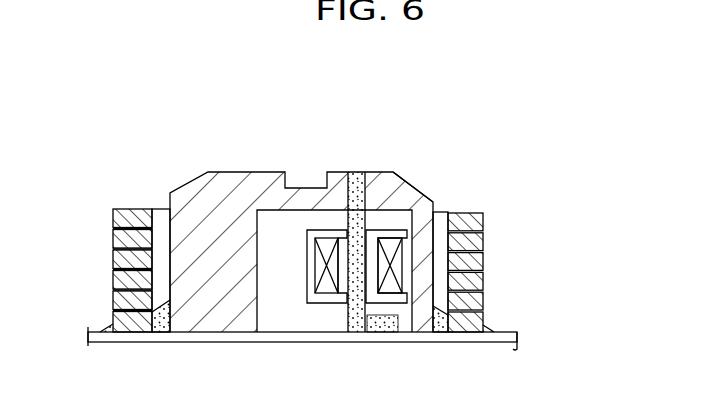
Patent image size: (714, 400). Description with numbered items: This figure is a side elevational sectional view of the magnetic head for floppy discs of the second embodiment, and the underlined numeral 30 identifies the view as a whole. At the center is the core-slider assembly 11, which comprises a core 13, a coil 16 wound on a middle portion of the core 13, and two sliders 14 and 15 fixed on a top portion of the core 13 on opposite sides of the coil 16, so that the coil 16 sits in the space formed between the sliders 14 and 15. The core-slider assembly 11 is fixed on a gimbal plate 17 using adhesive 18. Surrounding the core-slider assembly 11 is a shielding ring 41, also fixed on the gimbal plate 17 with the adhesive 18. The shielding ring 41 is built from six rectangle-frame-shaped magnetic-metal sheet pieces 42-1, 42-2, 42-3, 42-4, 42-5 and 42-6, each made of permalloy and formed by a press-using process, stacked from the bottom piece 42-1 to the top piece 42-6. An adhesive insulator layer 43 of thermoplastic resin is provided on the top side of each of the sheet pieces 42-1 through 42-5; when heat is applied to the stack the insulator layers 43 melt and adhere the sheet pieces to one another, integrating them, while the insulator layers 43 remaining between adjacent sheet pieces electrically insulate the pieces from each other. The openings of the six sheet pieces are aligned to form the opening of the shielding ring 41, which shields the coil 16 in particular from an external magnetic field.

The core-slider assembly 11 is at (317, 222).
The core 13 is at (357, 180).
The slider 14 is at (224, 180).
The slider 15 is at (412, 181).
The coil 16 is at (314, 268).
The gimbal plate 17 is at (308, 343).
The adhesive 18 is at (162, 331).
The laminated assembly 30 is at (532, 238).
The shielding ring 41 is at (97, 218).
The adhesive insulator layer 43 is at (100, 327).
The sheet piece 42-1 is at (483, 322).
The sheet piece 42-2 is at (483, 307).
The sheet piece 42-3 is at (483, 286).
The sheet piece 42-4 is at (483, 260).
The sheet piece 42-5 is at (483, 238).
The sheet piece 42-6 is at (483, 213).